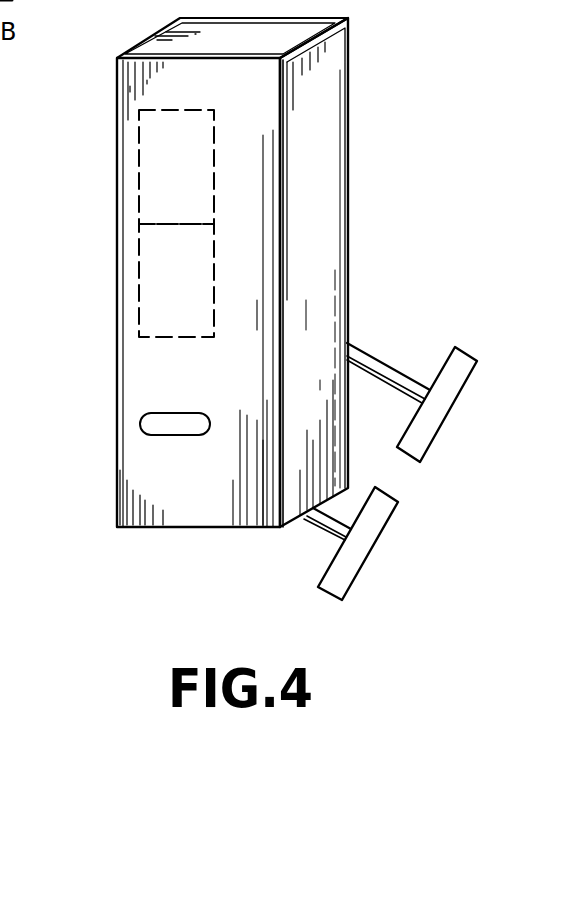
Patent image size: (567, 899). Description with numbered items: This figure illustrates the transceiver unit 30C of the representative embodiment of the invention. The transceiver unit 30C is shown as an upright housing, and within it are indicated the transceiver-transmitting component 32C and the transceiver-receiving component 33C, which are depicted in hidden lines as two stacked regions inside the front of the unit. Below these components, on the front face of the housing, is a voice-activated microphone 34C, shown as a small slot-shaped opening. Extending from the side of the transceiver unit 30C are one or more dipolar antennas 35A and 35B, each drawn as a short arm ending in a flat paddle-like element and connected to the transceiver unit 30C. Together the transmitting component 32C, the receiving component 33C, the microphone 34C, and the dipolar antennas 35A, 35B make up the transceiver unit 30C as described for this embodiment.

The transceiver unit 30C is at (333, 63).
The transceiver-transmitting component 32C is at (153, 193).
The transceiver-receiving component 33C is at (157, 315).
The voice-activated microphone 34C is at (158, 427).
The dipolar antenna 35A is at (342, 575).
The dipolar antenna 35B is at (463, 347).